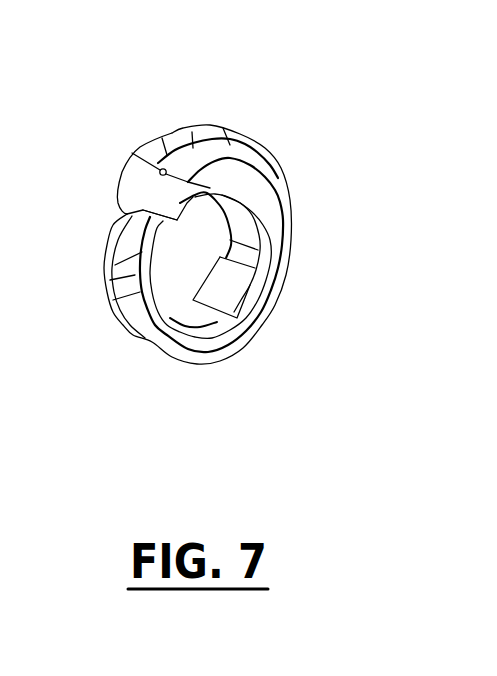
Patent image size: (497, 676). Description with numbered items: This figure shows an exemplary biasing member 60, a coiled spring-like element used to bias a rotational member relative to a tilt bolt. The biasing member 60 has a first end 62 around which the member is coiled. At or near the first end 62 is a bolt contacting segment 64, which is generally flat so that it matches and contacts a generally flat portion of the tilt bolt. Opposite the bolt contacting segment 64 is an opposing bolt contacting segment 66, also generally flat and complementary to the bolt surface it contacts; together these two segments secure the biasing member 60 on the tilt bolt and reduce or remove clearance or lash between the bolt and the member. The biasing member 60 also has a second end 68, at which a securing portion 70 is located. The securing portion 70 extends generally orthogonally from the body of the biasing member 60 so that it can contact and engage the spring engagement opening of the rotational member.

The biasing member 60 is at (165, 97).
The first end 62 is at (233, 313).
The bolt contacting segment 64 is at (223, 288).
The opposing bolt contacting segment 66 is at (137, 240).
The second end 68 is at (143, 208).
The securing portion 70 is at (192, 197).